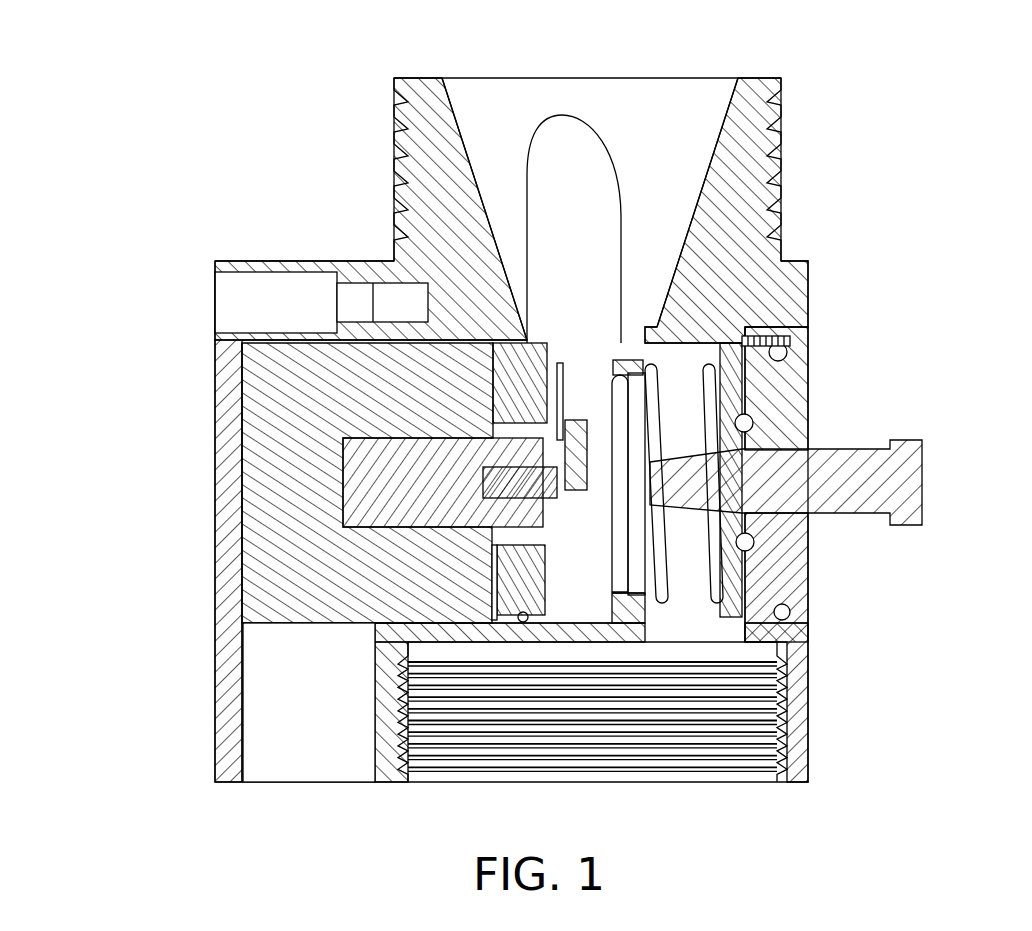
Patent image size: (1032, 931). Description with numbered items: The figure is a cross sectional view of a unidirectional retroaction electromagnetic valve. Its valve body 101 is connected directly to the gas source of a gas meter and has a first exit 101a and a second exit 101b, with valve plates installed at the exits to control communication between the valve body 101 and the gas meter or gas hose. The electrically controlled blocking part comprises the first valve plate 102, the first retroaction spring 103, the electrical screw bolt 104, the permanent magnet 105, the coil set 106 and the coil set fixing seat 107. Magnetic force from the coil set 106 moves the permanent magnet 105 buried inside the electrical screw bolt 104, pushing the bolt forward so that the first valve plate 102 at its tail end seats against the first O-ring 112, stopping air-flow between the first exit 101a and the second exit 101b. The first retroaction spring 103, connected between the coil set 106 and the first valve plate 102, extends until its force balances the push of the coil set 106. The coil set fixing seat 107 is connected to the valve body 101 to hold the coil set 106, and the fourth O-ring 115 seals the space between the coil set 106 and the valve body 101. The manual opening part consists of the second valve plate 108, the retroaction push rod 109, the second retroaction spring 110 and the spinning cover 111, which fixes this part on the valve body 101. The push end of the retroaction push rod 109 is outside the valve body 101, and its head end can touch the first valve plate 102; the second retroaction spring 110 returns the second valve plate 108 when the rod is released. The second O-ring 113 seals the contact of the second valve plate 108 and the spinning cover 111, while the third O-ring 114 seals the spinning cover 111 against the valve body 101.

The valve body 101 is at (747, 178).
The first exit 101a is at (572, 140).
The second exit 101b is at (700, 630).
The first valve plate 102 is at (560, 345).
The first retroaction spring 103 is at (556, 565).
The electrical screw bolt 104 is at (375, 512).
The permanent magnet 105 is at (510, 480).
The coil set 106 is at (272, 465).
The coil set fixing seat 107 is at (258, 760).
The second valve plate 108 is at (770, 335).
The retroaction push rod 109 is at (895, 483).
The second retroaction spring 110 is at (722, 582).
The spinning cover 111 is at (782, 560).
The first O-ring 112 is at (613, 600).
The second O-ring 113 is at (755, 425).
The third O-ring 114 is at (790, 352).
The fourth O-ring 115 is at (440, 305).